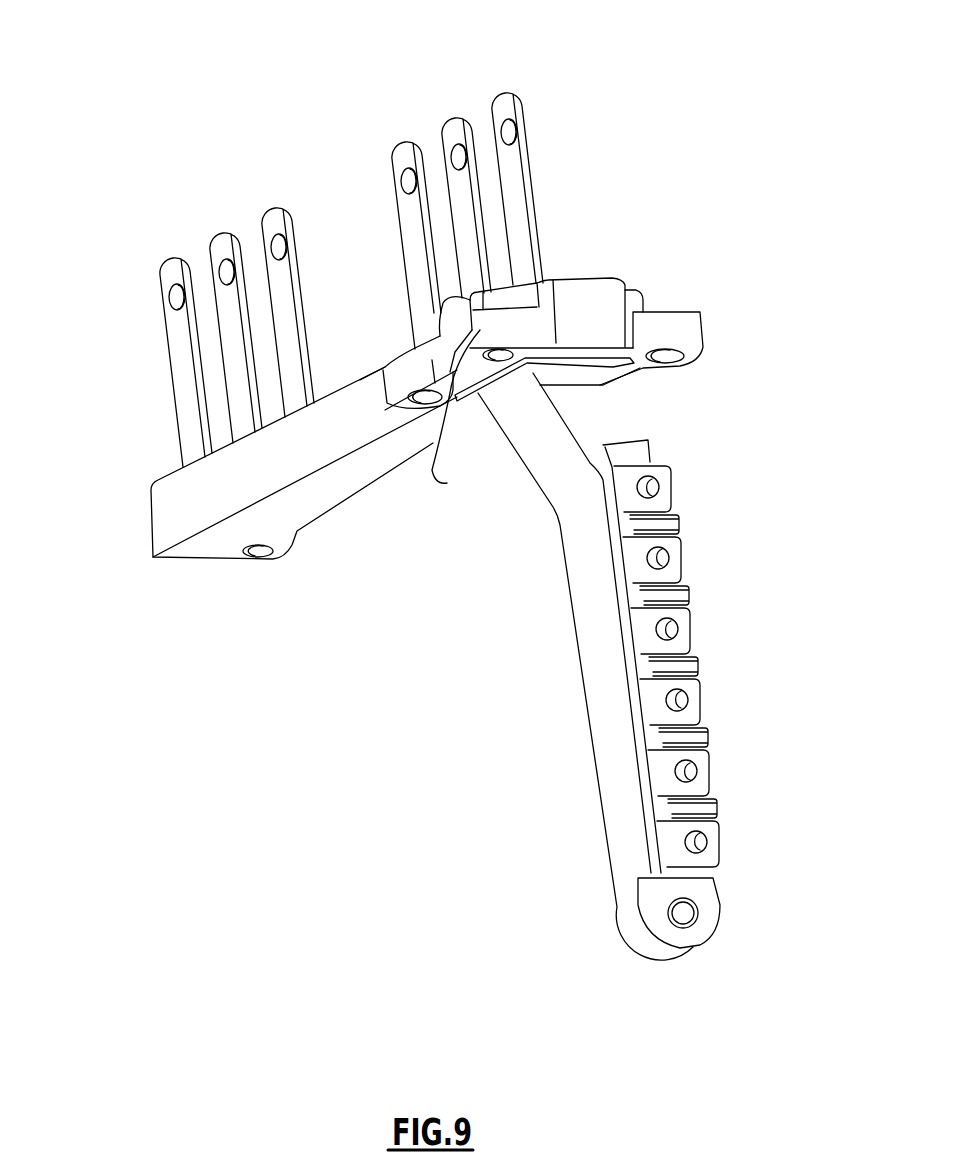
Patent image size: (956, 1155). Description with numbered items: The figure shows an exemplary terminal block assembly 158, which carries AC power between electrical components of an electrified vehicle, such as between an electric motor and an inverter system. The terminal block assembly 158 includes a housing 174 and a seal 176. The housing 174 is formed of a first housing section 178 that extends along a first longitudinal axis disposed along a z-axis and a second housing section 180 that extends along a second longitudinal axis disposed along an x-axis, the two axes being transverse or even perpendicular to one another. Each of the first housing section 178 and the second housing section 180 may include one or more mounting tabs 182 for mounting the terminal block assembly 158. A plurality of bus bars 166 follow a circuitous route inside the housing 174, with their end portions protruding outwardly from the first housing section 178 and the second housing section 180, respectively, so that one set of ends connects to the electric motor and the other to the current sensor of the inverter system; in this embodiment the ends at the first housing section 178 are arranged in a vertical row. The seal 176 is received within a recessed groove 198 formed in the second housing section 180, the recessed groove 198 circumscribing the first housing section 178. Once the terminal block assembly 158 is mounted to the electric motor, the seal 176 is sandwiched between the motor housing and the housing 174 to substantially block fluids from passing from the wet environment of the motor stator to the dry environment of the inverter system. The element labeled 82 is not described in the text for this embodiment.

The terminal block assembly 158 is at (624, 108).
The bus bars 166 is at (540, 237).
The recessed groove 198 is at (587, 353).
The housing 174 is at (640, 303).
The flange 82 is at (697, 330).
The seal 176 is at (620, 373).
The second housing section 180 is at (188, 503).
The first housing section 178 is at (617, 807).
The mounting tabs 182 is at (400, 410).